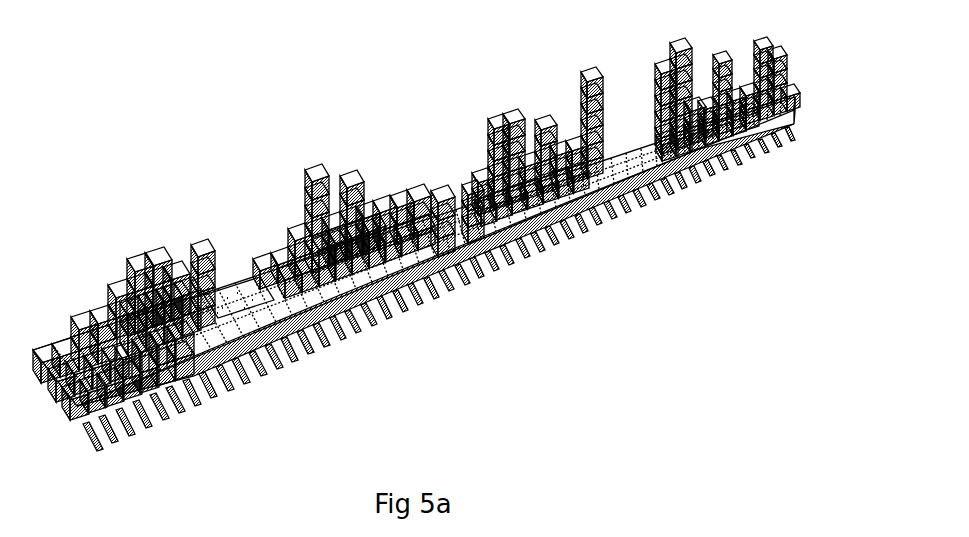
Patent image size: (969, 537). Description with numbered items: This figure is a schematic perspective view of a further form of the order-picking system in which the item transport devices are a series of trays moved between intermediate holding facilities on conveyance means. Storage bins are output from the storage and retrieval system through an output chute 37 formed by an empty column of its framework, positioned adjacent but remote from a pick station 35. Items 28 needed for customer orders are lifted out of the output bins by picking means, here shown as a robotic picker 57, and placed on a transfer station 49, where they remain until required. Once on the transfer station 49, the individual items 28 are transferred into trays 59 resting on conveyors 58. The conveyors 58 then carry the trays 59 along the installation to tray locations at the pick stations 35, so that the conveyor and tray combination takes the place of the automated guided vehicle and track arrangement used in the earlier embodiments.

The items 28 is at (233, 305).
The pick station 35 is at (422, 172).
The output chute 37 is at (177, 236).
The transfer station 49 is at (633, 137).
The robotic picking means 57 is at (200, 260).
The conveyors 58 is at (470, 238).
The trays 59 is at (370, 283).